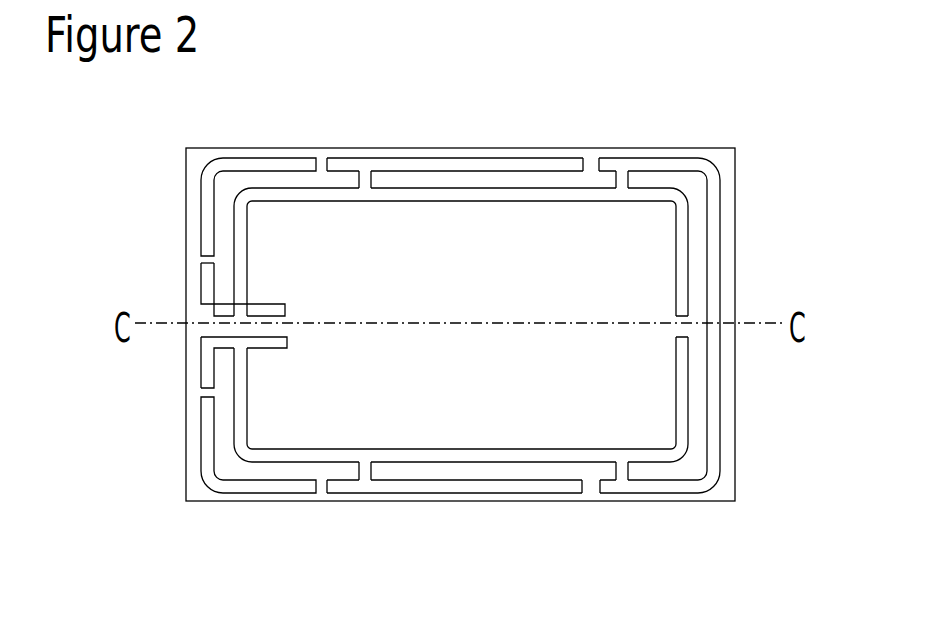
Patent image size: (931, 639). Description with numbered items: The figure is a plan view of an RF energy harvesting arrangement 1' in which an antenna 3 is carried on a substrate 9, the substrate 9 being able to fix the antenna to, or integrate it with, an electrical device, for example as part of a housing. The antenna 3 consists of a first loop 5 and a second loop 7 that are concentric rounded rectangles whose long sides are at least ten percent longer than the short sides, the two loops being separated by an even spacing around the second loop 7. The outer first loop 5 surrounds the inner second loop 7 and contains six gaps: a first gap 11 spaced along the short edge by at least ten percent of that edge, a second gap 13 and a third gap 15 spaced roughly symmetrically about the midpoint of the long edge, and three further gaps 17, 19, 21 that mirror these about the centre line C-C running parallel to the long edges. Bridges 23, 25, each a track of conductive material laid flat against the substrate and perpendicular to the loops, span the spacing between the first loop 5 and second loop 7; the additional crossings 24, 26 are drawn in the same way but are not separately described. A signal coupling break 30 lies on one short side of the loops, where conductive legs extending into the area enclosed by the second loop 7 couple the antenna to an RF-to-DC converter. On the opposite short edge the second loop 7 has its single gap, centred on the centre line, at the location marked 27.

The antenna arrangement 1' is at (510, 324).
The antenna 3 is at (280, 420).
The first loop 5 is at (714, 463).
The second loop 7 is at (589, 458).
The substrate 9 is at (722, 379).
The first gap 11 is at (207, 258).
The second gap 13 is at (322, 163).
The third gap 15 is at (594, 163).
The gap 17 is at (318, 490).
The gap 19 is at (588, 488).
The gap 21 is at (205, 392).
The bridge 23 is at (364, 178).
The connecting element 24 is at (618, 176).
The bridge 25 is at (363, 478).
The connecting element 26 is at (618, 465).
The end portion of inner loop 27 is at (679, 322).
The signal coupling break 30 is at (306, 310).